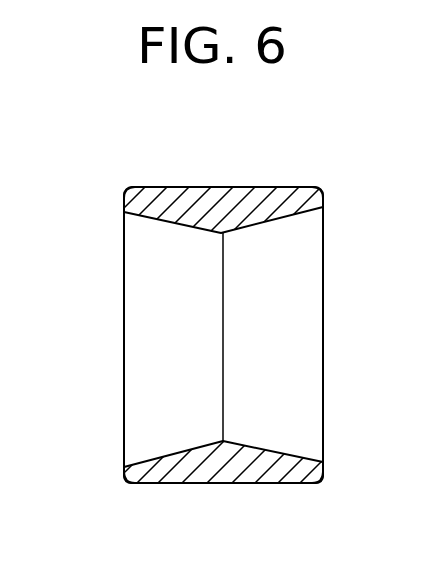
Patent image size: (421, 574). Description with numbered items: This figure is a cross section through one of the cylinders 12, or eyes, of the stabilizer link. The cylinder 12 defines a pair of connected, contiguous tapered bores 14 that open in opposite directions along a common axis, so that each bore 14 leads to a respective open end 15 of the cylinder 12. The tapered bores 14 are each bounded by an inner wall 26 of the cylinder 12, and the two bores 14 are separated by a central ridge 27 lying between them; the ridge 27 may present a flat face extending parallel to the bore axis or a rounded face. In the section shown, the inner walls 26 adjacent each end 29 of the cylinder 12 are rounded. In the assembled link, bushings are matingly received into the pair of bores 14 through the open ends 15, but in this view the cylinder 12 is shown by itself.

The cylinder 12 is at (222, 188).
The tapered bore 14 is at (272, 222).
The open end 15 is at (123, 232).
The inner wall 26 is at (308, 455).
The central ridge 27 is at (224, 338).
The end of the cylinder 29 is at (124, 210).